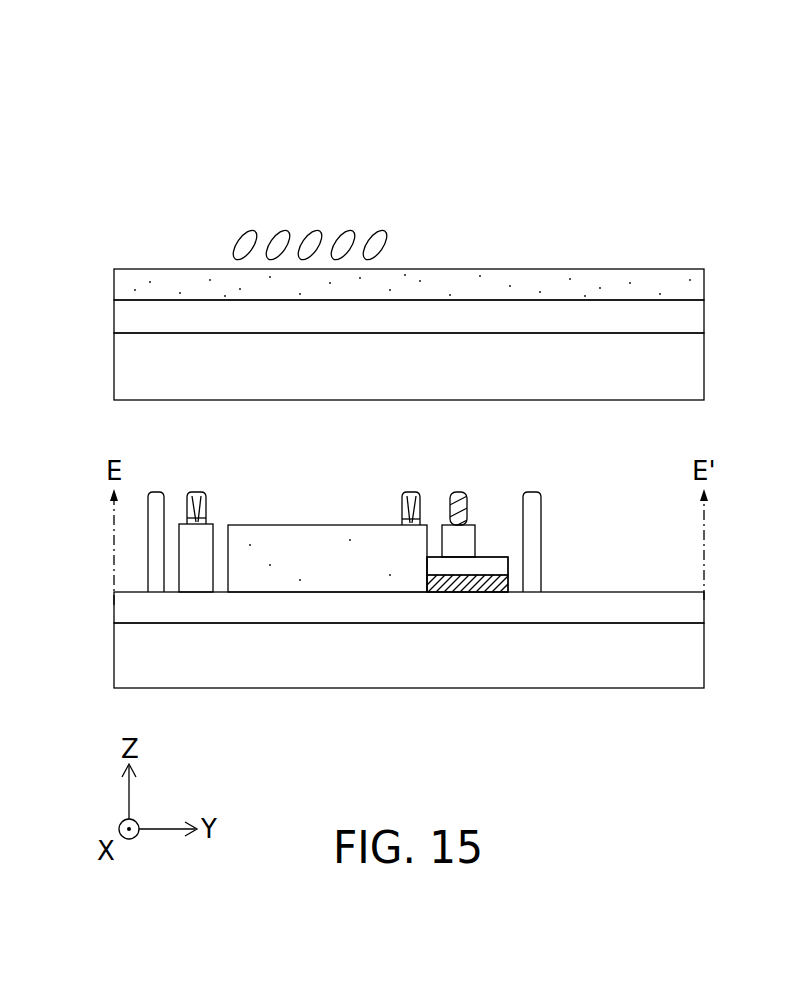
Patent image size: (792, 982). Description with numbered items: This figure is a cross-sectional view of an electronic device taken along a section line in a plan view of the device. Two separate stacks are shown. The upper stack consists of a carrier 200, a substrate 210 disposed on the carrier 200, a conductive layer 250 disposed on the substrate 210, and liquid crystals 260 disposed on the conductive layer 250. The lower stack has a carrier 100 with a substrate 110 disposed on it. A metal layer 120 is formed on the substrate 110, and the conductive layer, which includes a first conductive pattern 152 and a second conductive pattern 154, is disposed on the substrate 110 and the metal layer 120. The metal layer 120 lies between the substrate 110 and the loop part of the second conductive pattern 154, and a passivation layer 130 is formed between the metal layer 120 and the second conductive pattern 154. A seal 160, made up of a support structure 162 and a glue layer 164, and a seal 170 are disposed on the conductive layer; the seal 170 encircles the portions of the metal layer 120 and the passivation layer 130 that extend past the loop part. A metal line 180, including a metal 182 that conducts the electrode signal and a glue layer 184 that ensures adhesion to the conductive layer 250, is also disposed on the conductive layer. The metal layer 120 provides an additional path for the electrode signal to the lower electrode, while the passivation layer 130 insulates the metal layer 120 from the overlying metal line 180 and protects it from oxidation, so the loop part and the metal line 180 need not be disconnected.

The carrier 100 is at (697, 648).
The substrate 110 is at (697, 605).
The metal layer 120 is at (445, 585).
The passivation layer 130 is at (487, 573).
The first conductive pattern 152 is at (320, 572).
The second conductive pattern 154 is at (198, 575).
The seal 160 is at (361, 313).
The support structure 162 is at (410, 524).
The glue layer 164 is at (402, 500).
The seal 170 is at (155, 496).
The metal line 180 is at (578, 305).
The metal 182 is at (458, 496).
The glue layer 184 is at (466, 518).
The carrier 200 is at (697, 367).
The substrate 210 is at (697, 318).
The conductive layer 250 is at (697, 285).
The liquid crystals 260 is at (400, 237).